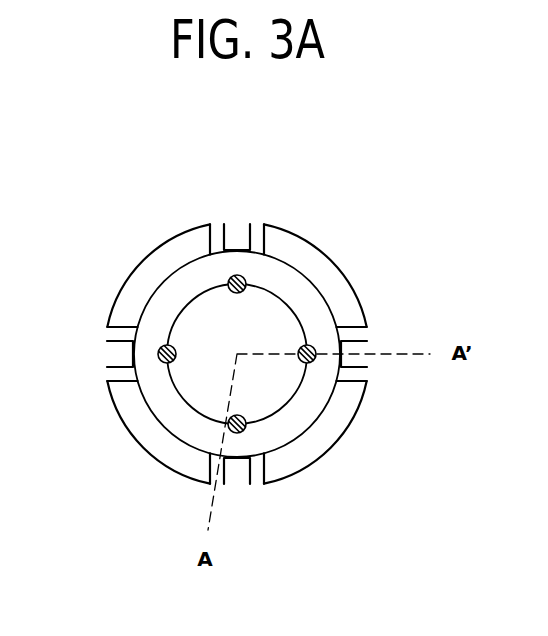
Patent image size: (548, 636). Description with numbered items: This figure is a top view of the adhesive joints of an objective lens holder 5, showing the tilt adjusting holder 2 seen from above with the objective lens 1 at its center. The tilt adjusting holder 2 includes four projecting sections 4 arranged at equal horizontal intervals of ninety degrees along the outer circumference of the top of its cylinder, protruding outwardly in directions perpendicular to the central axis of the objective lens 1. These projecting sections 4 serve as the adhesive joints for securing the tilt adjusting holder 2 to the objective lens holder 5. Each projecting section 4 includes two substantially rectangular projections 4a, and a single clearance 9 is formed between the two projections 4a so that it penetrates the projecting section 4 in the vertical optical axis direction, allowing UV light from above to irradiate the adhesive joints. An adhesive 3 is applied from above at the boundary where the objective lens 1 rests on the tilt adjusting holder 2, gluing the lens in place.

The objective lens 1 is at (298, 407).
The tilt adjusting holder 2 is at (142, 393).
The adhesive 3 is at (246, 282).
The projecting section 4 is at (198, 200).
The projection 4a is at (215, 235).
The objective lens holder 5 is at (257, 367).
The clearance 9 is at (112, 357).